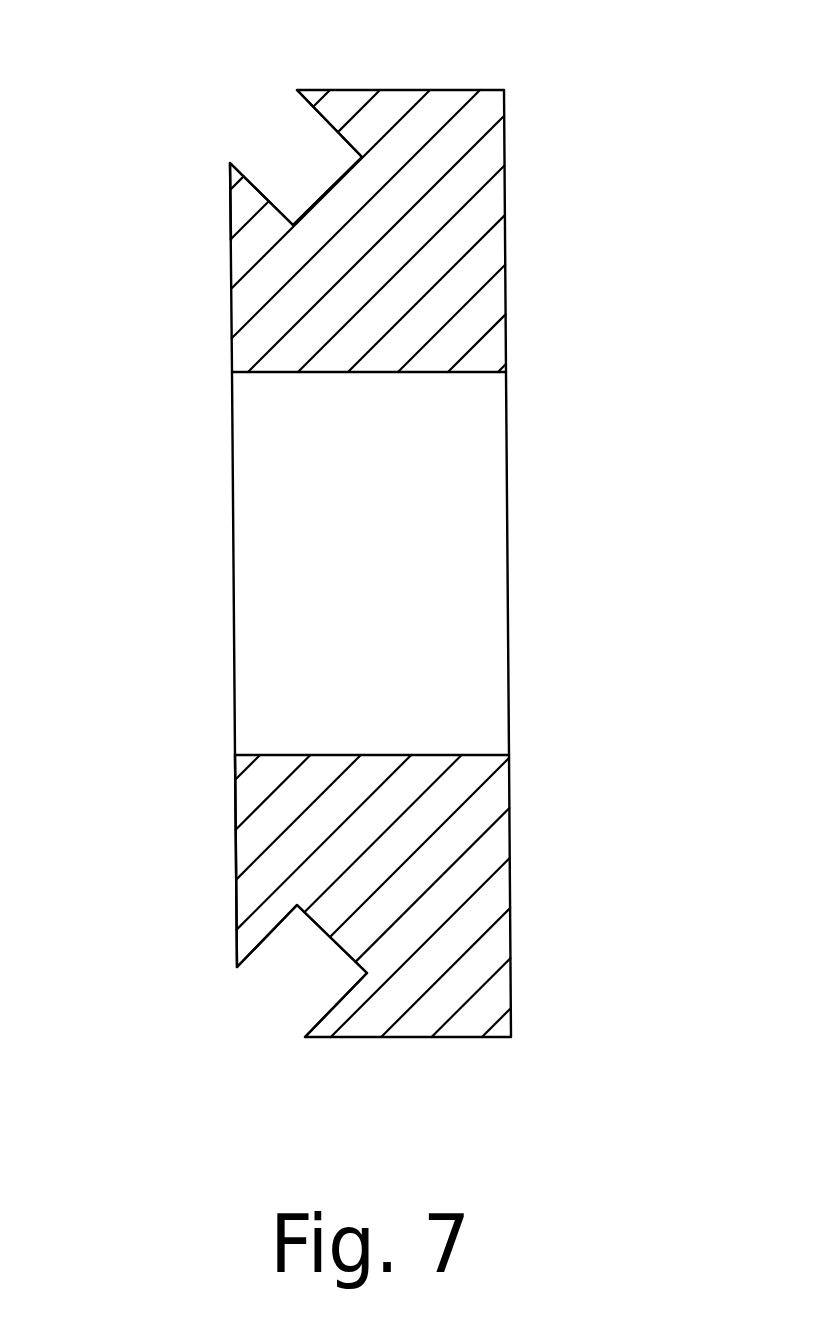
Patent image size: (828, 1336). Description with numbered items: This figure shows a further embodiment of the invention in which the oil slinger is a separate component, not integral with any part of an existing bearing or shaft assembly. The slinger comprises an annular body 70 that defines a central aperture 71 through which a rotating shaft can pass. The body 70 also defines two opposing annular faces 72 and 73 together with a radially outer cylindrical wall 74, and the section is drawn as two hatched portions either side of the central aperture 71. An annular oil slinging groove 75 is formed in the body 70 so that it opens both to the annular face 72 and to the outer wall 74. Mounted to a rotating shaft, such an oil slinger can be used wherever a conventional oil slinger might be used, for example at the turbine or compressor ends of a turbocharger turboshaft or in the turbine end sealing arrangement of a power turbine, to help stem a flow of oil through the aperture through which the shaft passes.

The annular body 70 is at (493, 792).
The central aperture 71 is at (459, 523).
The annular face 72 is at (237, 838).
The annular face 73 is at (505, 288).
The radially outer cylindrical wall 74 is at (399, 89).
The annular oil slinging groove 75 is at (297, 155).